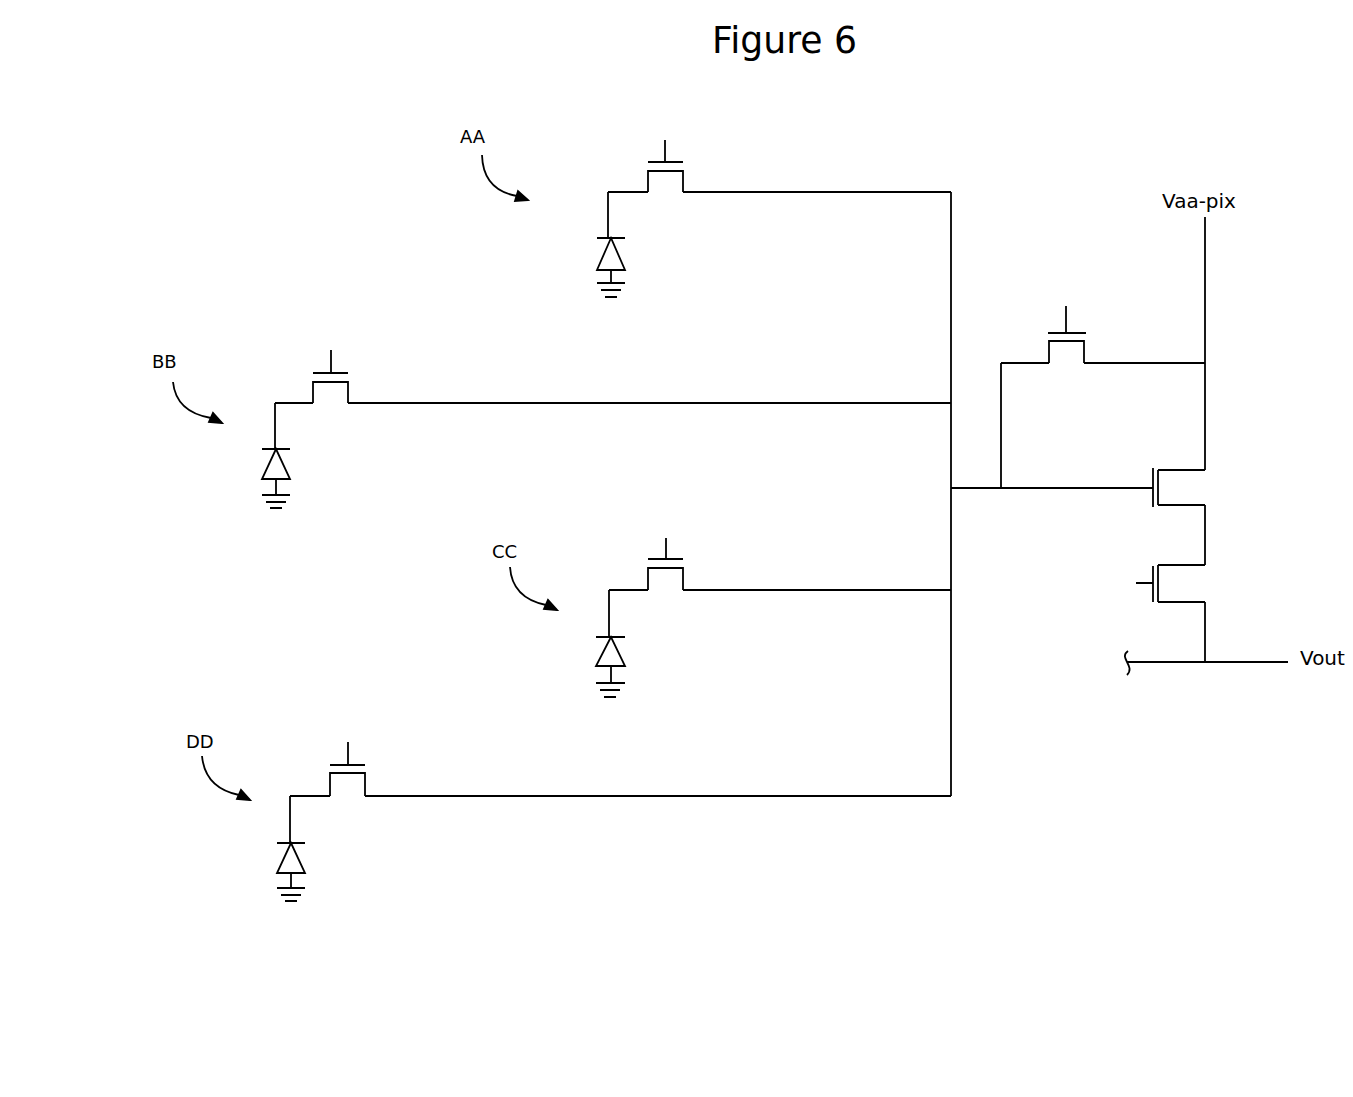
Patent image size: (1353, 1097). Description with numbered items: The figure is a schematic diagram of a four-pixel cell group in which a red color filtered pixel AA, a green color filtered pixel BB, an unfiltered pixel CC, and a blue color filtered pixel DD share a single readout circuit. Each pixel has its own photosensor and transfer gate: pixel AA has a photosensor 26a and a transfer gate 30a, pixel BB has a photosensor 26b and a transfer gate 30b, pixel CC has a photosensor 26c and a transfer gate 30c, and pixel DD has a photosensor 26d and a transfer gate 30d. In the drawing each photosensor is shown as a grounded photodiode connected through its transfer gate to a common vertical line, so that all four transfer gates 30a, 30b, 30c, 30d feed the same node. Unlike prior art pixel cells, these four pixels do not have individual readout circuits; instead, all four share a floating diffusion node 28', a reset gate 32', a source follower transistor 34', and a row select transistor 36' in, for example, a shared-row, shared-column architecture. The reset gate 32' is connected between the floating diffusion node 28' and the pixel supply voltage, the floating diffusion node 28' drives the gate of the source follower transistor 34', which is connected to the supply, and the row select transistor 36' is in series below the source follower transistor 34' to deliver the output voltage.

The photosensor 26a is at (587, 244).
The photosensor 26b is at (255, 455).
The photosensor 26c is at (593, 643).
The photosensor 26d is at (268, 848).
The transfer gate 30a is at (646, 155).
The transfer gate 30b is at (312, 365).
The transfer gate 30c is at (646, 551).
The transfer gate 30d is at (327, 760).
The floating diffusion node 28' is at (1052, 503).
The reset gate 32' is at (1103, 382).
The source follower transistor 34' is at (1159, 483).
The row select transistor 36' is at (1154, 583).